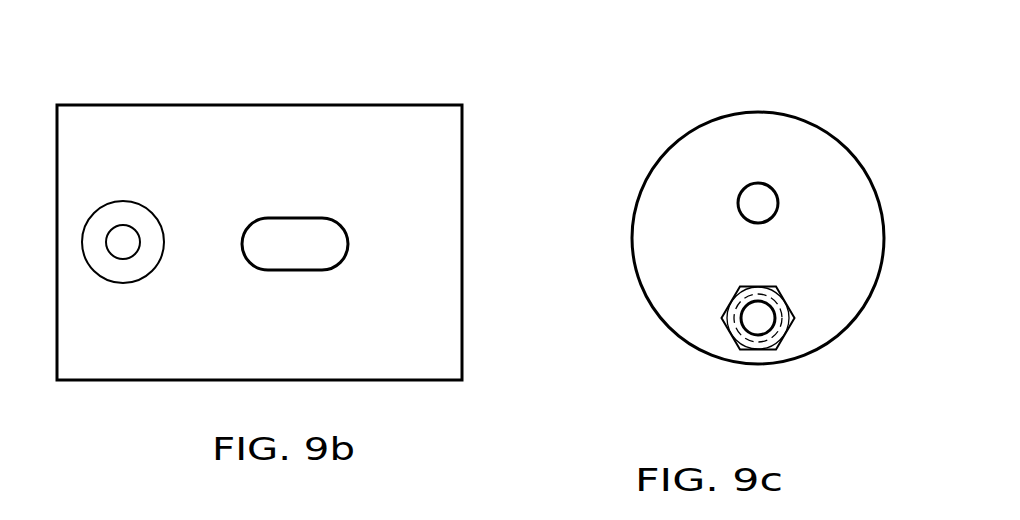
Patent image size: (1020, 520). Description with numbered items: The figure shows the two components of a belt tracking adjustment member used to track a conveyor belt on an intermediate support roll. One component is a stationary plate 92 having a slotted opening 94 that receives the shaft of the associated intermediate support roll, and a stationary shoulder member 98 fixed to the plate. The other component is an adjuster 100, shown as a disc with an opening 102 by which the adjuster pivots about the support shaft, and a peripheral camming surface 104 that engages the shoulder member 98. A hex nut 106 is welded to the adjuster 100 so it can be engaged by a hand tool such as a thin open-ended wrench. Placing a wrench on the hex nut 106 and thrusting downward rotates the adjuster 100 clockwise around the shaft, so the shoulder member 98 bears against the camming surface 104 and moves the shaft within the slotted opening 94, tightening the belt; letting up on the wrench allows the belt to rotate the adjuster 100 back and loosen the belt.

In FIG. 9B, the stationary plate 92 is at (480, 150).
In FIG. 9B, the slotted opening 94 is at (318, 218).
In FIG. 9B, the stationary shoulder member 98 is at (145, 205).
In FIG. 9C, the adjuster 100 is at (746, 366).
In FIG. 9C, the opening 102 is at (777, 195).
In FIG. 9C, the peripheral camming surface 104 is at (783, 112).
In FIG. 9C, the hex nut 106 is at (790, 330).